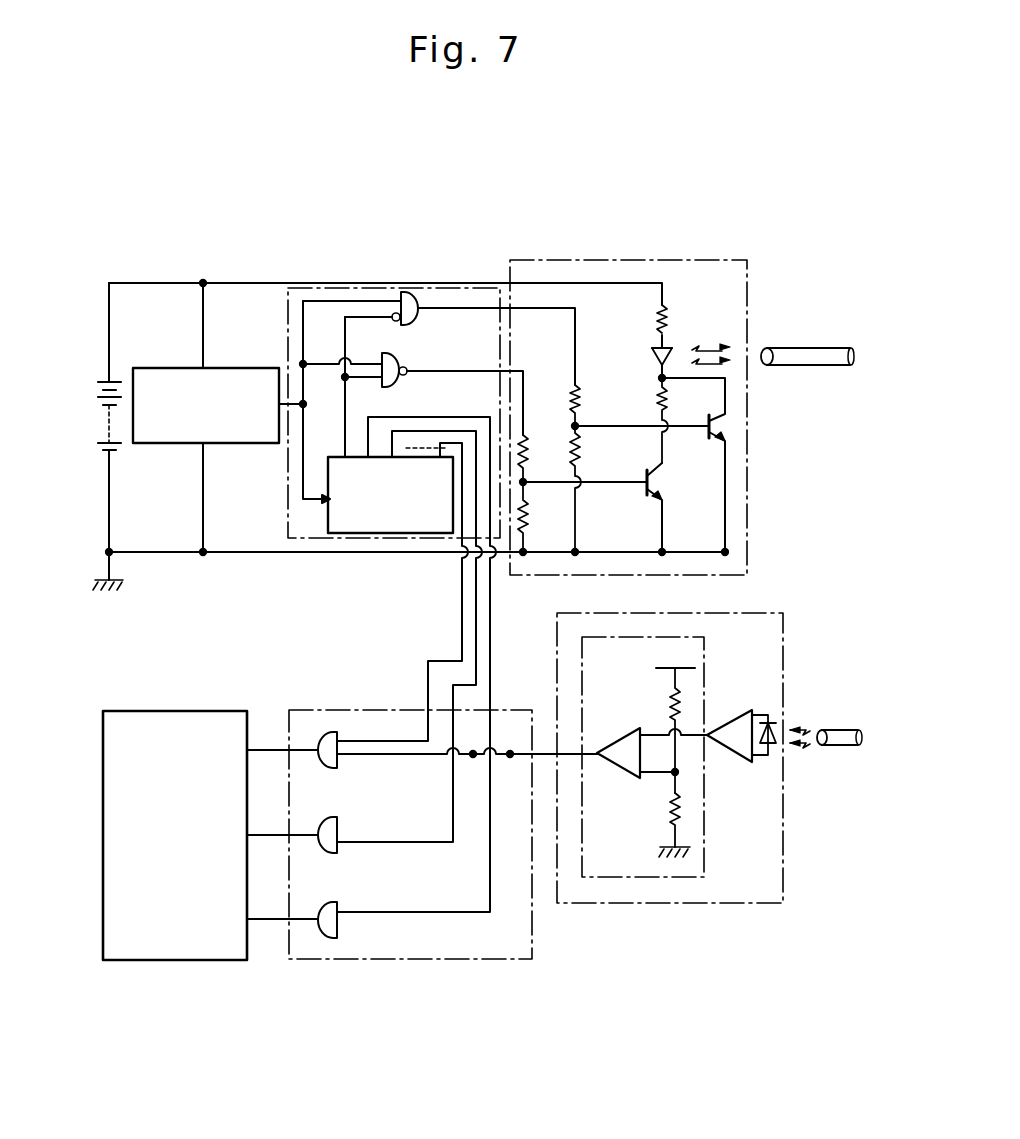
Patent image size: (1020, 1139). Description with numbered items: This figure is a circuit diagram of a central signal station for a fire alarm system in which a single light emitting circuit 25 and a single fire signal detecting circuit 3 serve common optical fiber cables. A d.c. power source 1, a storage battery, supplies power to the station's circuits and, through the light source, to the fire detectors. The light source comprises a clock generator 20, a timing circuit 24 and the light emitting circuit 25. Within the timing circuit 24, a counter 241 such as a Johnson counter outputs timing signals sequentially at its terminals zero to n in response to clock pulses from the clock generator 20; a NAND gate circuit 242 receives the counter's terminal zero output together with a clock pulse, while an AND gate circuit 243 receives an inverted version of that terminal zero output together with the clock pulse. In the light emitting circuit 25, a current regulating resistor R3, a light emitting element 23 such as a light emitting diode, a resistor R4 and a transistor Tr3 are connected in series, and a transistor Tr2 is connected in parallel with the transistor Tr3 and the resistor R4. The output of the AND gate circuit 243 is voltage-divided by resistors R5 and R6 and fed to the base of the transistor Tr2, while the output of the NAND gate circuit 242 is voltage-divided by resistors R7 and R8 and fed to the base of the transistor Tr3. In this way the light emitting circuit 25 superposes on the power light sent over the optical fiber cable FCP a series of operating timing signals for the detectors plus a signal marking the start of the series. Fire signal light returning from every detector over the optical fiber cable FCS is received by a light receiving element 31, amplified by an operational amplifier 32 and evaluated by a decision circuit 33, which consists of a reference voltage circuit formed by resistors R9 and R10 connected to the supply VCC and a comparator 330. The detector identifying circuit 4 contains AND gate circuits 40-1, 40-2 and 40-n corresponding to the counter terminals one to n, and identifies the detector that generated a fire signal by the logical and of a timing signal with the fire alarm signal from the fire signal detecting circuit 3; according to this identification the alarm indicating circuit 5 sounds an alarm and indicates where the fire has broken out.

The d.c. power source 1 is at (118, 380).
The clock generator 20 is at (243, 368).
The timing circuit 24 is at (288, 290).
The AND gate circuit 243 is at (412, 324).
The NAND gate circuit 242 is at (398, 386).
The counter 241 is at (391, 534).
The light emitting circuit 25 is at (606, 260).
The current regulating resistor R3 is at (667, 312).
The light emitting element 23 is at (652, 356).
The resistor R4 is at (667, 397).
The resistor R5 is at (579, 401).
The resistor R6 is at (580, 456).
The resistor R7 is at (528, 456).
The resistor R8 is at (528, 521).
The transistor Tr2 is at (720, 446).
The transistor Tr3 is at (660, 498).
The optical fiber cable for power light FCP is at (803, 348).
The fire signal detecting circuit 3 is at (757, 613).
The decision circuit 33 is at (704, 645).
The supply voltage VCC is at (675, 657).
The operational amplifier 32 is at (738, 712).
The light receiving element 31 is at (772, 758).
The optical fiber cable for signal light FCS is at (838, 731).
The comparator 330 is at (613, 745).
The resistor R9 is at (670, 706).
The resistor R10 is at (670, 812).
The alarm indicating circuit 5 is at (203, 711).
The detector identifying circuit 4 is at (360, 710).
The AND gate circuit 40-n is at (331, 770).
The AND gate circuit 40-2 is at (333, 856).
The AND gate circuit 40-1 is at (336, 938).